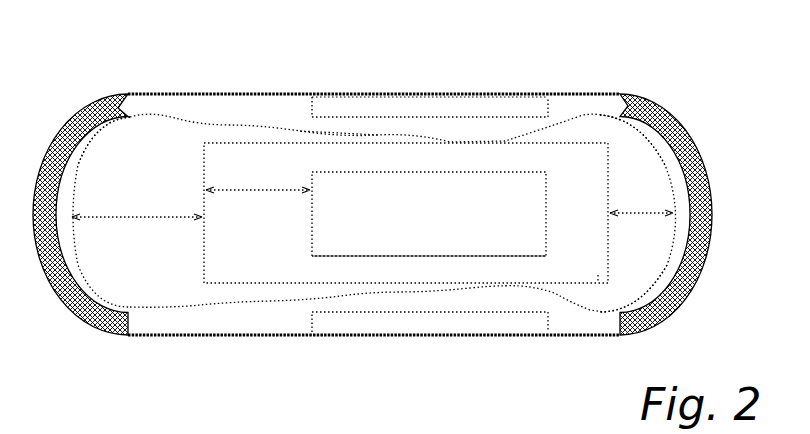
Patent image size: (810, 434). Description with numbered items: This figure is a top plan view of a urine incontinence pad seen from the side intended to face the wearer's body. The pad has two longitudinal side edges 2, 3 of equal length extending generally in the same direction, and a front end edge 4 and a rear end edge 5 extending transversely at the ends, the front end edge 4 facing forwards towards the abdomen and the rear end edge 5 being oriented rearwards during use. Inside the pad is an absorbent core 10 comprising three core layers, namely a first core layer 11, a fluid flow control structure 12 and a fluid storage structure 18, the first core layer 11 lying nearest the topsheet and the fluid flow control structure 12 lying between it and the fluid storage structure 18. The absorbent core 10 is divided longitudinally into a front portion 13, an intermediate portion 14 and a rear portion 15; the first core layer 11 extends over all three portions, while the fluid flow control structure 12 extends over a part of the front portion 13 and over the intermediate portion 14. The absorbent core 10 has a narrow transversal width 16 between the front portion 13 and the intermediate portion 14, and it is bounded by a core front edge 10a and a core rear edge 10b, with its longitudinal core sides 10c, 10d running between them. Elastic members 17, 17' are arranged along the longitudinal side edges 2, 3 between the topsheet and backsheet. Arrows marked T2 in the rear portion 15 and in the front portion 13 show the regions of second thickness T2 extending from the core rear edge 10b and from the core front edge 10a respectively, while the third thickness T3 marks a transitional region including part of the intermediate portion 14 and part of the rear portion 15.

The longitudinal side edge 2 is at (398, 96).
The longitudinal side edge 3 is at (377, 334).
The front end edge 4 is at (710, 223).
The rear end edge 5 is at (40, 210).
The absorbent core 10 is at (185, 133).
The core front edge 10a is at (700, 167).
The core rear edge 10b is at (72, 170).
The pouch top side 10c is at (378, 135).
The pouch bottom side 10d is at (337, 297).
The first core layer 11 is at (688, 288).
The fluid flow control structure 12 is at (538, 247).
The front portion 13 is at (630, 150).
The intermediate portion 14 is at (440, 200).
The rear portion 15 is at (133, 158).
The narrow transversal width 16 is at (502, 142).
The elastic member 17 is at (430, 67).
The elastic member 17' is at (430, 357).
The fluid storage structure 18 is at (597, 275).
The second thickness T2 is at (127, 218).
The third thickness T3 is at (235, 190).